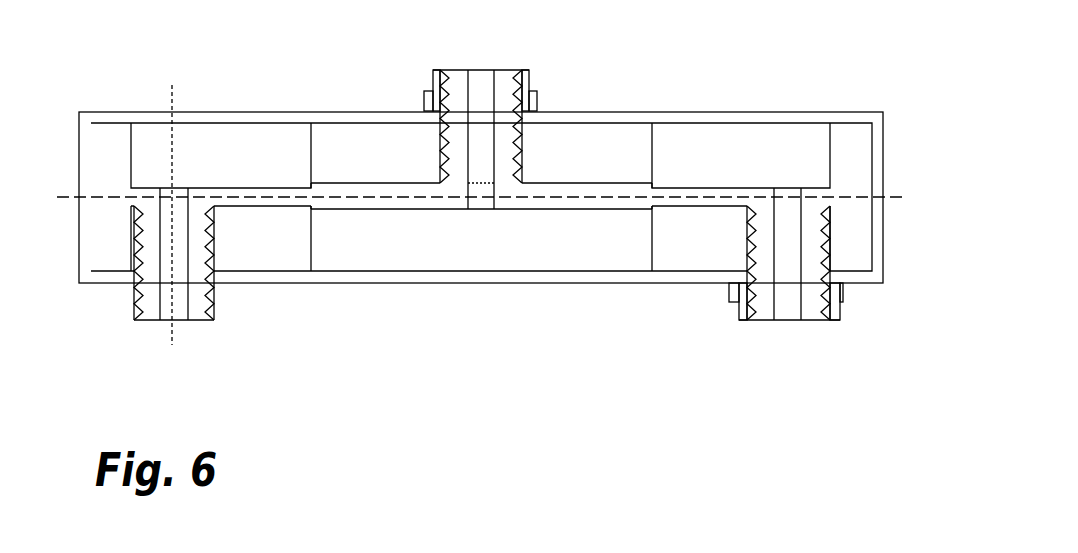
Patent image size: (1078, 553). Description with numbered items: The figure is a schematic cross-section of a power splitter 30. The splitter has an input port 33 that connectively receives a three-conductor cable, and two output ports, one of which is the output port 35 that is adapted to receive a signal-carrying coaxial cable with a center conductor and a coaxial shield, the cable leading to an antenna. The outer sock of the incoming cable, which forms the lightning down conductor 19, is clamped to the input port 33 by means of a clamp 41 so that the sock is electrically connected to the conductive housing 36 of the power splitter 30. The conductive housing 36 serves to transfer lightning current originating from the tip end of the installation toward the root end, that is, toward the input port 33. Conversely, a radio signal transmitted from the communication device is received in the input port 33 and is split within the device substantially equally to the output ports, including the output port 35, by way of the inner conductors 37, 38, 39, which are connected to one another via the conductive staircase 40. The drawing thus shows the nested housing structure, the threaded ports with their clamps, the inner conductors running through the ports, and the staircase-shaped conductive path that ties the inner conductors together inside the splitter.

The lightning down conductor 19 is at (437, 70).
The power splitter 30 is at (739, 349).
The input port 33 is at (507, 68).
The output port 35 is at (148, 322).
The conductive housing 36 is at (112, 283).
The inner conductor 37 is at (482, 198).
The inner conductor 38 is at (792, 213).
The inner conductor 39 is at (181, 322).
The conductive staircase 40 is at (356, 233).
The clamp 41 is at (424, 107).